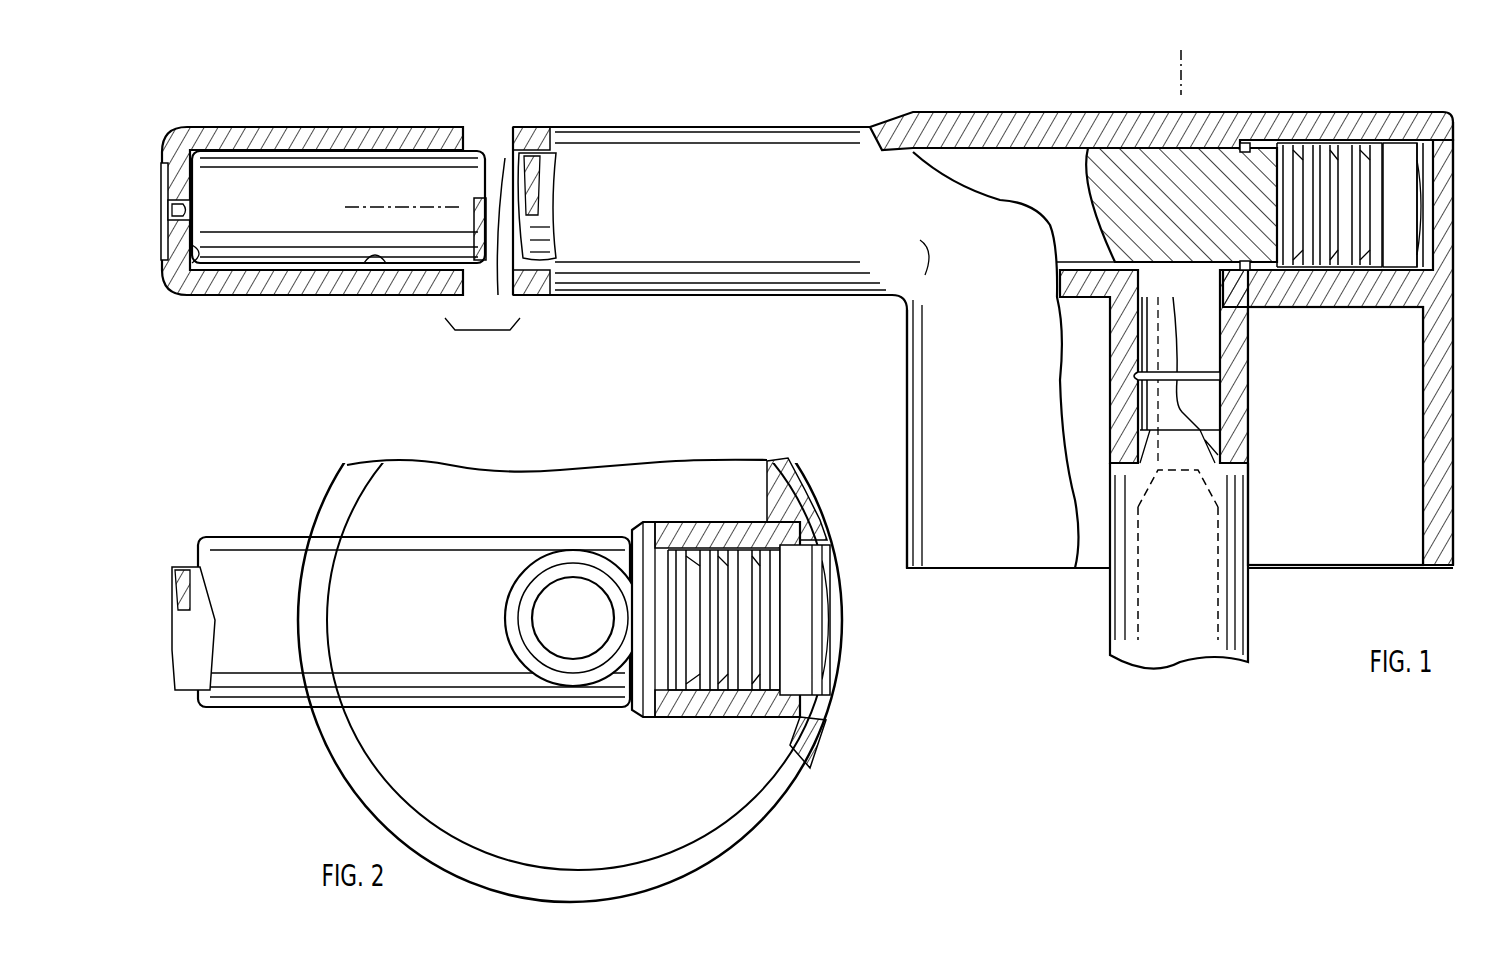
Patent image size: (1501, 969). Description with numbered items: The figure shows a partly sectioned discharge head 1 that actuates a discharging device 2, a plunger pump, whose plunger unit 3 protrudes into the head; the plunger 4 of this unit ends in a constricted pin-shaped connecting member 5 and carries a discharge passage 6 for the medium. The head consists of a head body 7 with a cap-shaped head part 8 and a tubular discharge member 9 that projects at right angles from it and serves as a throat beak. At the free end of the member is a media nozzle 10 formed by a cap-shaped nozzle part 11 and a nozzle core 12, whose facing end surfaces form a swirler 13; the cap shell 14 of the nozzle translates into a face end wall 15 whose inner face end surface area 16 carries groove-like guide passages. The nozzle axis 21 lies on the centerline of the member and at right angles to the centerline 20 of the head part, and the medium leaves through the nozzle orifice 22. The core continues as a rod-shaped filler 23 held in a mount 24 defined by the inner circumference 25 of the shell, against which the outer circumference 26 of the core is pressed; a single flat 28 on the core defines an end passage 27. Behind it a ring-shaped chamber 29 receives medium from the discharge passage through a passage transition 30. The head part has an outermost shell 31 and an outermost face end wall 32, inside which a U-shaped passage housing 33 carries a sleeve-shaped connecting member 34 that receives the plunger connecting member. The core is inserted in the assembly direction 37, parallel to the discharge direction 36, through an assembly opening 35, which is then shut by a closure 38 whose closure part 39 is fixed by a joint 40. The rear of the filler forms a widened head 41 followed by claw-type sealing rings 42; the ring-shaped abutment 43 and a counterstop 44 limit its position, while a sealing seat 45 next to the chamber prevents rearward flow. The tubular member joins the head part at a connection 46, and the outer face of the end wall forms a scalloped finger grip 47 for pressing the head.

In FIG. 1, the discharge head 1 is at (903, 88).
In FIG. 1, the discharging device 2 is at (1105, 708).
In FIG. 1, the plunger unit 3 is at (1078, 628).
In FIG. 1, the plunger 4 is at (1245, 605).
In FIG. 1, the connecting member 5 is at (1185, 410).
In FIG. 1, the discharge passage 6 is at (1215, 520).
In FIG. 1, the head body 7 is at (880, 345).
In FIG. 1, the head part 8 is at (1448, 90).
In FIG. 2, the head part 8 is at (340, 810).
In FIG. 1, the discharge member 9 is at (620, 108).
In FIG. 2, the discharge member 9 is at (243, 540).
In FIG. 1, the media nozzle 10 is at (158, 164).
In FIG. 1, the nozzle part 11 is at (212, 133).
In FIG. 1, the nozzle core 12 is at (258, 168).
In FIG. 1, the swirler 13 is at (212, 205).
In FIG. 1, the cap shell 14 is at (272, 133).
In FIG. 1, the face end wall 15 is at (168, 260).
In FIG. 1, the face end surface area 16 is at (198, 252).
In FIG. 1, the centerline of the head part 20 is at (1181, 85).
In FIG. 1, the nozzle axis 21 is at (385, 207).
In FIG. 1, the nozzle orifice 22 is at (176, 208).
In FIG. 1, the filler 23 is at (545, 215).
In FIG. 2, the filler 23 is at (200, 580).
In FIG. 1, the mount 24 is at (482, 315).
In FIG. 1, the inner circumference 25 is at (513, 160).
In FIG. 1, the outer circumference 26 is at (478, 148).
In FIG. 1, the end passage 27 is at (375, 265).
In FIG. 1, the flat 28 is at (548, 282).
In FIG. 2, the flat 28 is at (178, 610).
In FIG. 1, the ring-shaped chamber 29 is at (1112, 178).
In FIG. 1, the passage transition 30 is at (1160, 310).
In FIG. 1, the outermost shell 31 is at (1440, 568).
In FIG. 2, the outermost shell 31 is at (325, 500).
In FIG. 1, the outermost face end wall 32 is at (995, 120).
In FIG. 2, the outermost face end wall 32 is at (668, 462).
In FIG. 1, the passage housing 33 is at (1290, 318).
In FIG. 2, the passage housing 33 is at (455, 545).
In FIG. 1, the connecting member 34 is at (1123, 402).
In FIG. 2, the connecting member 34 is at (510, 600).
In FIG. 1, the assembly opening 35 is at (1445, 303).
In FIG. 1, the discharge direction 36 is at (257, 221).
In FIG. 1, the assembly direction 37 is at (1370, 210).
In FIG. 2, the assembly direction 37 is at (540, 742).
In FIG. 1, the closure 38 is at (1455, 172).
In FIG. 1, the closure part 39 is at (1362, 275).
In FIG. 1, the joint 40 is at (1395, 145).
In FIG. 1, the head 41 is at (1425, 192).
In FIG. 2, the head 41 is at (820, 580).
In FIG. 1, the claw-type sealing rings 42 is at (1300, 160).
In FIG. 2, the claw-type sealing rings 42 is at (695, 700).
In FIG. 1, the ring-shaped abutment 43 is at (1375, 160).
In FIG. 1, the counterstop 44 is at (1245, 147).
In FIG. 1, the sealing seat 45 is at (1238, 275).
In FIG. 1, the connection 46 is at (928, 242).
In FIG. 2, the connection 46 is at (310, 715).
In FIG. 1, the finger grip 47 is at (1150, 122).